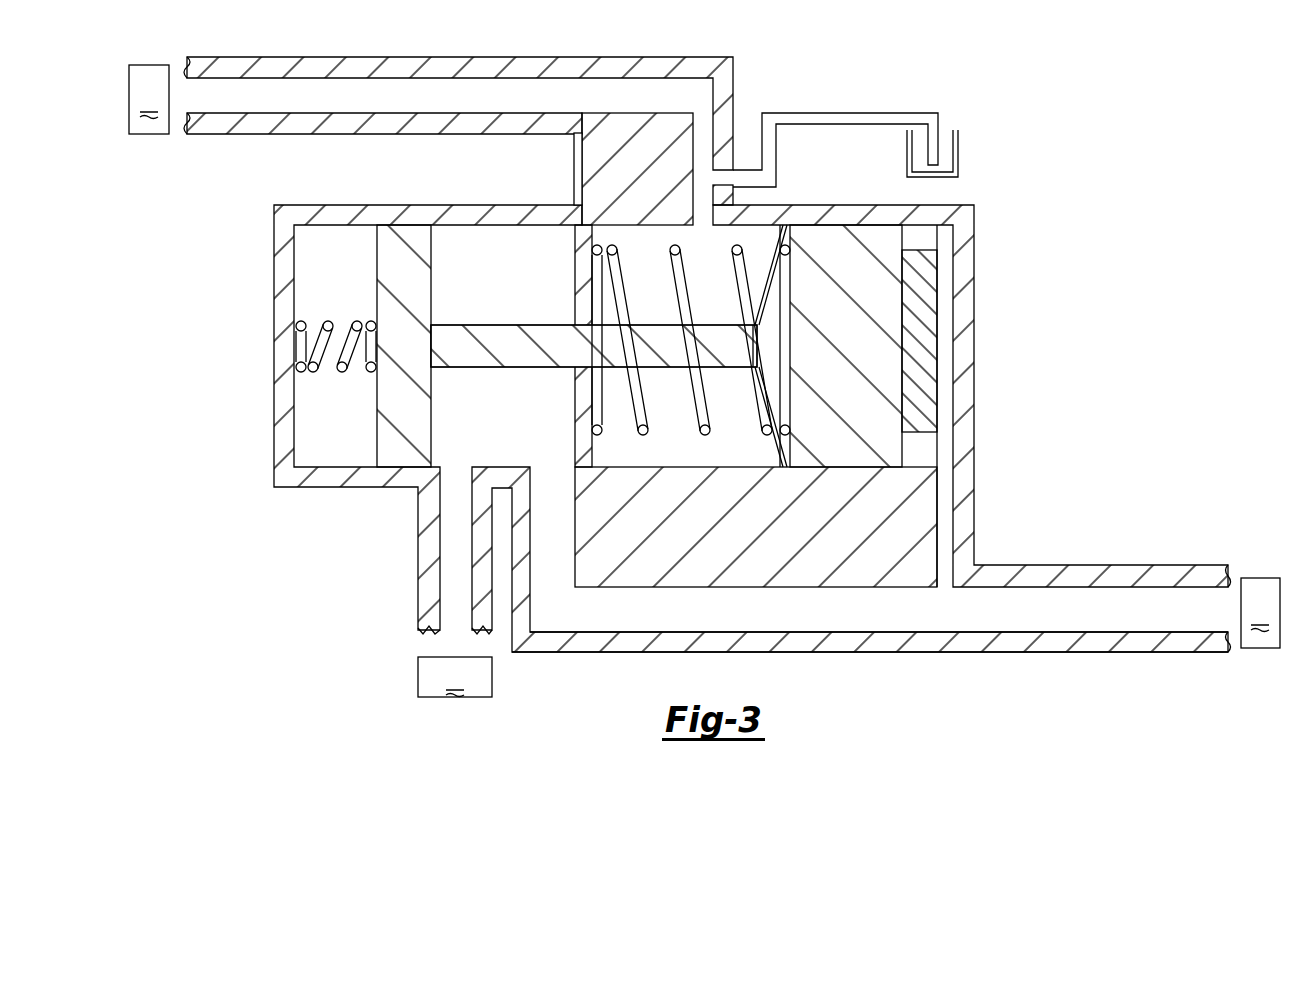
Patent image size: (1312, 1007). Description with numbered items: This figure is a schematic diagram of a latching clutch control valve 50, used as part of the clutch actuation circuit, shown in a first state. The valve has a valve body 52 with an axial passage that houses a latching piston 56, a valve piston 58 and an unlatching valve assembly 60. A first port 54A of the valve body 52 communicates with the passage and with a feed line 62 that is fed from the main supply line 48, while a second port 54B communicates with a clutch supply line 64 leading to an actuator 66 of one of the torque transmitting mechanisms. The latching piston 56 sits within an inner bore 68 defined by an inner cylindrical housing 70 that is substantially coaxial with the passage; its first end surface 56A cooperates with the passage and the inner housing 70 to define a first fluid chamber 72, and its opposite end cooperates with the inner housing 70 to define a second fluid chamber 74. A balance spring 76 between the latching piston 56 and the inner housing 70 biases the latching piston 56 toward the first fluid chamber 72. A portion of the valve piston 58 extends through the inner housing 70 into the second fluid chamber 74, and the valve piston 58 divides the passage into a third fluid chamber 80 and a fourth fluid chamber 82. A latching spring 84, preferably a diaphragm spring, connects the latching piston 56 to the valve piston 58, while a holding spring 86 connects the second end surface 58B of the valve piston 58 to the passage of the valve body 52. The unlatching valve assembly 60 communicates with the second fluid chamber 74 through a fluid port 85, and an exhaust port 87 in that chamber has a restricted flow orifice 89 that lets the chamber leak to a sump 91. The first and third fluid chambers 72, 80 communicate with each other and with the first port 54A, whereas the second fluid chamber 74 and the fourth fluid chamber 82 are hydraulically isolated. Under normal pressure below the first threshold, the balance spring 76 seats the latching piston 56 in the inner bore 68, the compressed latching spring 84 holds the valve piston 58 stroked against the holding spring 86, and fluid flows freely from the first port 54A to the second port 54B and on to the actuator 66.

The main supply line 48 is at (1241, 612).
The latching clutch control valve 50 is at (982, 36).
The valve body 52 is at (975, 416).
The first port 54A is at (755, 322).
The second port 54B is at (457, 475).
The latching piston 56 is at (840, 243).
The first end surface 56A is at (937, 378).
The valve piston 58 is at (498, 360).
The second end surface 58B is at (377, 272).
The unlatching valve assembly 60 is at (195, 99).
The feed line 62 is at (1052, 627).
The clutch supply line 64 is at (450, 562).
The actuator 66 is at (455, 603).
The inner bore 68 is at (703, 458).
The inner cylindrical housing 70 is at (812, 553).
The first fluid chamber 72 is at (947, 325).
The second fluid chamber 74 is at (750, 253).
The balance spring 76 is at (677, 297).
The third fluid chamber 80 is at (511, 240).
The fourth fluid chamber 82 is at (324, 295).
The latching spring 84 is at (757, 372).
The fluid port 85 is at (703, 223).
The holding spring 86 is at (337, 372).
The exhaust port 87 is at (716, 172).
The restricted flow orifice 89 is at (748, 168).
The sump 91 is at (958, 153).